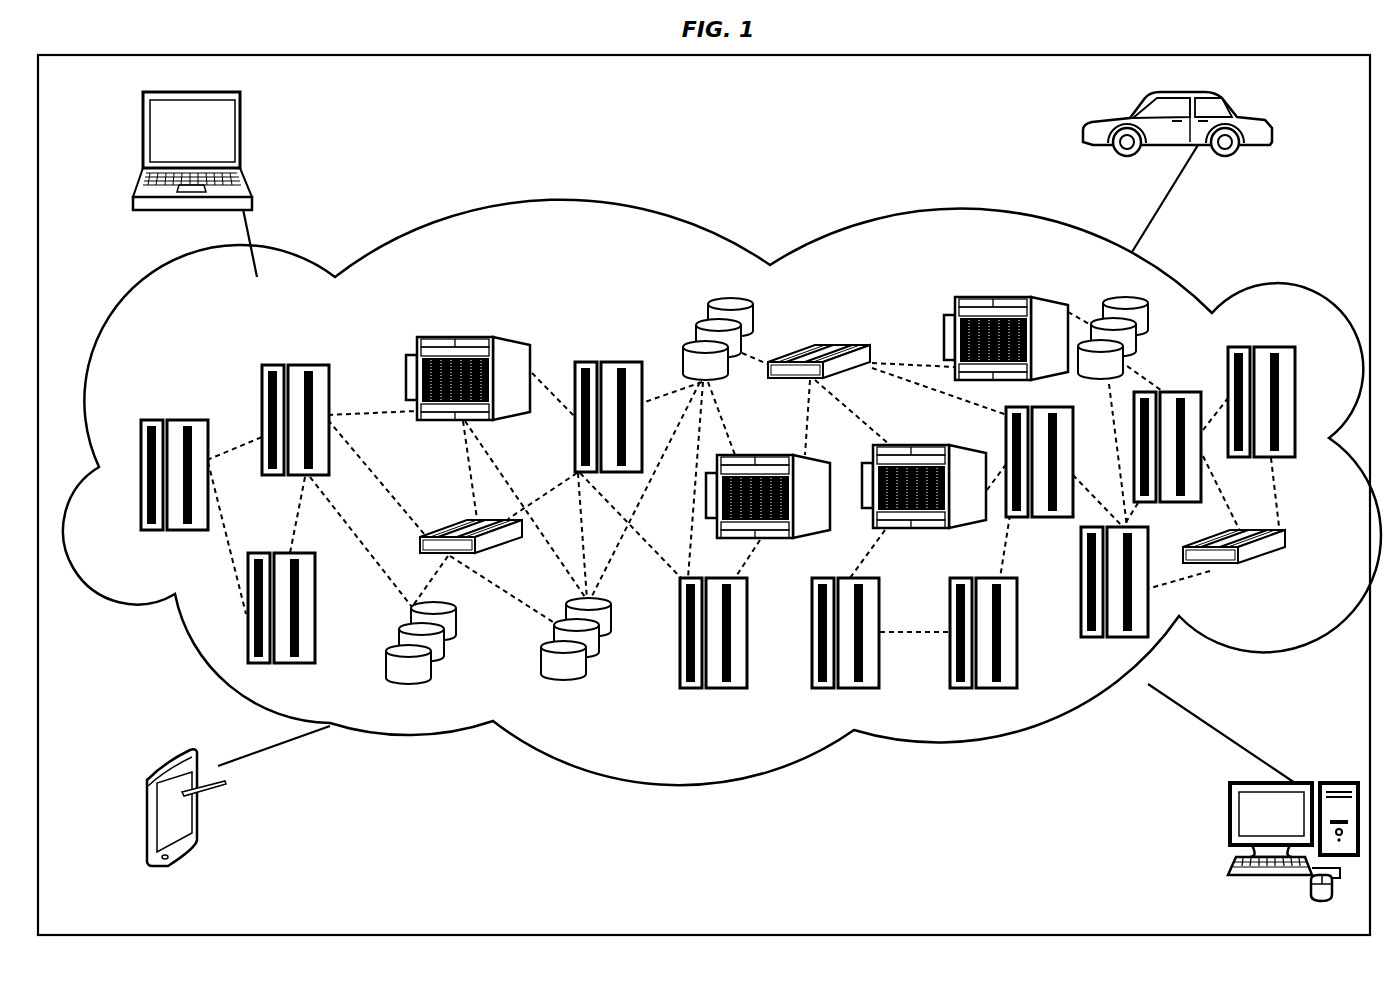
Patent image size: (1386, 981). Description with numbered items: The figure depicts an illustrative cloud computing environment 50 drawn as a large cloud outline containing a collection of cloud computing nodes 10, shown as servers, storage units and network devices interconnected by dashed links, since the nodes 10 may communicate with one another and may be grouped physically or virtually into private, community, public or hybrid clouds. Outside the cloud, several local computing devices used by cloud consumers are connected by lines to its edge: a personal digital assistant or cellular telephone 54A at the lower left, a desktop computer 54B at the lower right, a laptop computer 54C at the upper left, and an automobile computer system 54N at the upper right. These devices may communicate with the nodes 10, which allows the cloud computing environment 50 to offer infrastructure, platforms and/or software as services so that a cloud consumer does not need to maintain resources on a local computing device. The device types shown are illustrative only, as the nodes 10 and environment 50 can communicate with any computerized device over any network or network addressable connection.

The cloud computing node 10 is at (899, 232).
The cloud computing environment 50 is at (623, 205).
The personal digital assistant or cellular telephone 54A is at (148, 800).
The desktop computer 54B is at (1256, 823).
The laptop computer 54C is at (178, 138).
The automobile computer system 54N is at (1246, 117).